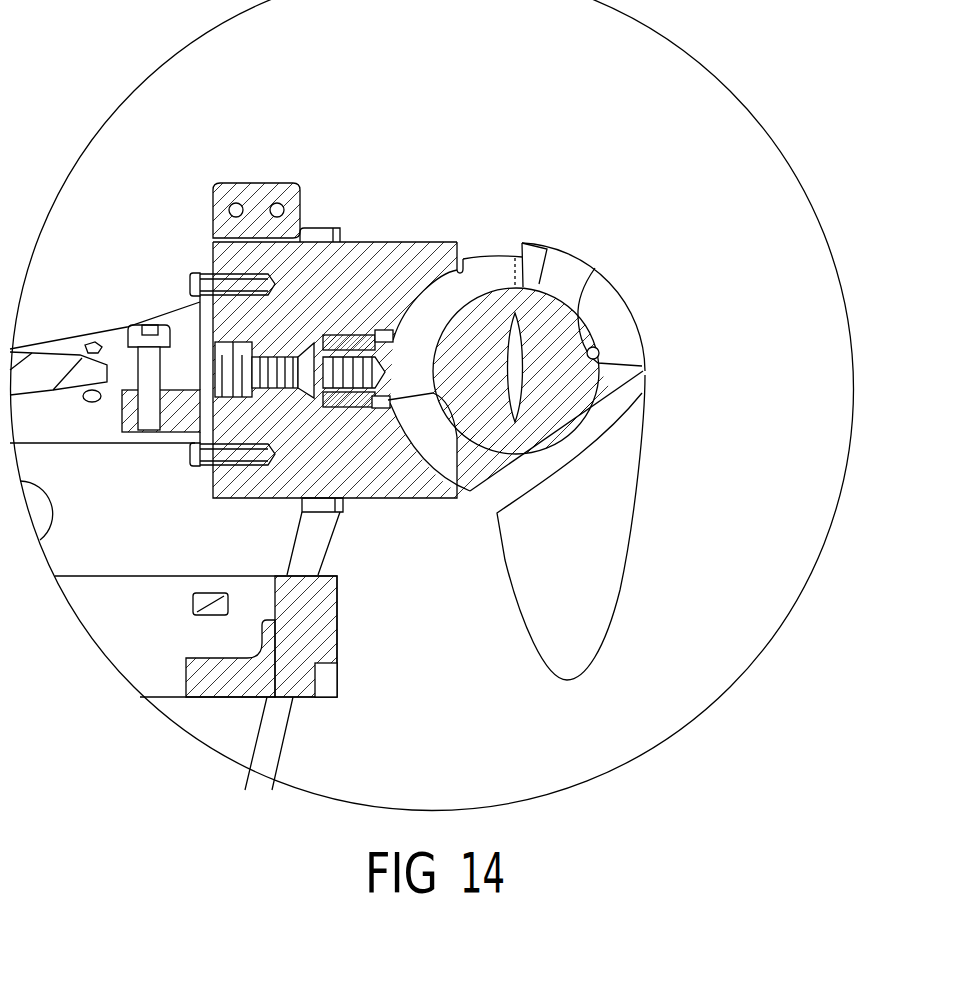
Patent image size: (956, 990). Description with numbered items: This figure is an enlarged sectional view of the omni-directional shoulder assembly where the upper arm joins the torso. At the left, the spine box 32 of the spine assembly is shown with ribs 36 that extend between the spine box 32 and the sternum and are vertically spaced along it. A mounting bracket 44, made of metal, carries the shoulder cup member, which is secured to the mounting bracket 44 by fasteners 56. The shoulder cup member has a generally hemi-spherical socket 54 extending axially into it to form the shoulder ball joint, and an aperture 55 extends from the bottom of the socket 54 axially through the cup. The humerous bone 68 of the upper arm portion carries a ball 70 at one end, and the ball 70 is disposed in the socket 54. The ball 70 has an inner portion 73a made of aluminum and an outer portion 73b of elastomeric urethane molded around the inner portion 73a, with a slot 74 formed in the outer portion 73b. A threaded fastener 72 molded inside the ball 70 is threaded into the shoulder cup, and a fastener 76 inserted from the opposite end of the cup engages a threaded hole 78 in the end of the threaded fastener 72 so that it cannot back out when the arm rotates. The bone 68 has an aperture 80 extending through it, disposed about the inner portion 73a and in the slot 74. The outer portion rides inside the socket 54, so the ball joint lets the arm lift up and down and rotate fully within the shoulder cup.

The spine box 32 is at (407, 240).
The ribs 36 is at (325, 633).
The mounting bracket 44 is at (257, 183).
The socket 54 is at (460, 270).
The aperture 55 is at (393, 405).
The fasteners 56 is at (197, 277).
The humerous bone 68 is at (627, 568).
The ball 70 is at (630, 310).
The threaded fastener 72 is at (410, 382).
The inner portion 73a is at (595, 268).
The outer portion 73b is at (560, 268).
The slot 74 is at (493, 268).
The fastener 76 is at (223, 358).
The threaded hole 78 is at (327, 378).
The aperture 80 is at (598, 363).